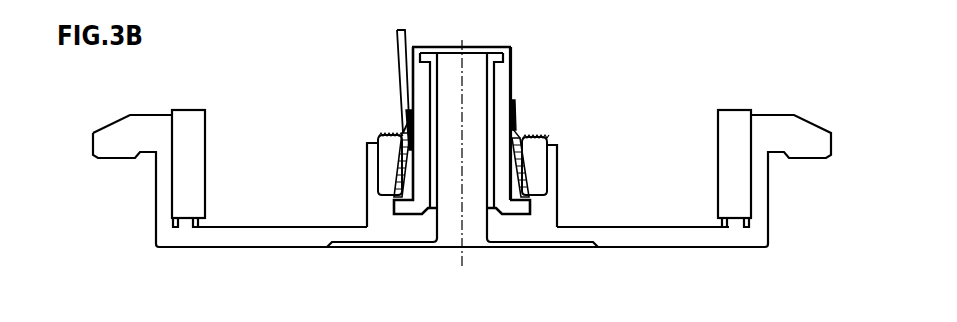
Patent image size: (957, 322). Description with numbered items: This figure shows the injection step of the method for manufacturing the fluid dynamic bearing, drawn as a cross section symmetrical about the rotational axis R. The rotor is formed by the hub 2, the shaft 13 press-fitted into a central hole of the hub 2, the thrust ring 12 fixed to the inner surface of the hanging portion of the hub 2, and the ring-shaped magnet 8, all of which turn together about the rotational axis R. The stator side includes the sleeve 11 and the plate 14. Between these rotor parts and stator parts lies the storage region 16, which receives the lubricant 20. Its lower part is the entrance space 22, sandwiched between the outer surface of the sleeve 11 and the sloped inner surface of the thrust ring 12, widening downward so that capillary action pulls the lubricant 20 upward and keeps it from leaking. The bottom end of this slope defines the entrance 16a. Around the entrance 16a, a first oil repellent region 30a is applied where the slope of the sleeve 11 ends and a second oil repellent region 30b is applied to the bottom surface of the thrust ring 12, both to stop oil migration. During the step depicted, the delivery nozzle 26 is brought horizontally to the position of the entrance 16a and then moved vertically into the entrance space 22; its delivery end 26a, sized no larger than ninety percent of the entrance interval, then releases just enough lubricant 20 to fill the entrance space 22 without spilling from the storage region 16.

The hub 2 is at (118, 128).
The ring-shaped magnet 8 is at (205, 130).
The sleeve 11 is at (413, 47).
The thrust ring 12 is at (383, 170).
The shaft 13 is at (448, 238).
The plate 14 is at (488, 47).
The storage region 16 is at (530, 203).
The entrance 16a is at (522, 130).
The lubricant 20 is at (397, 182).
The entrance space 22 is at (525, 177).
The delivery nozzle 26 is at (397, 47).
The delivery end 26a is at (400, 163).
The first oil repellent region 30a is at (403, 100).
The second oil repellent region 30b is at (380, 133).
The rotational axis R is at (465, 262).